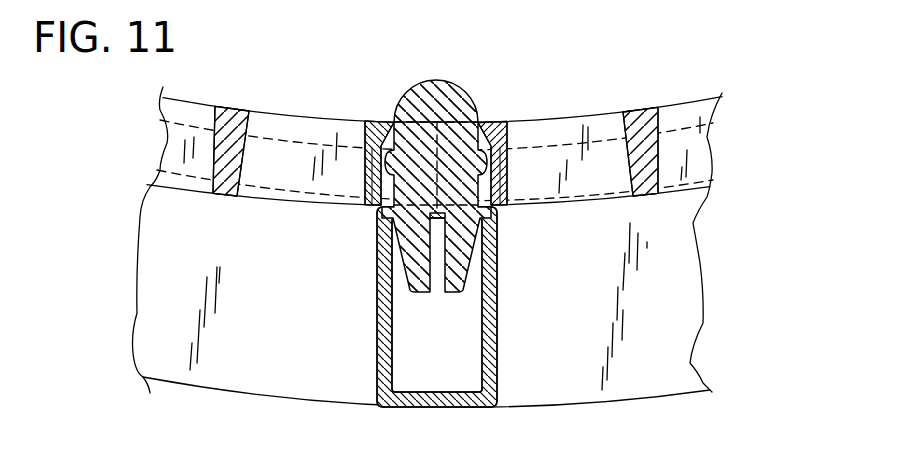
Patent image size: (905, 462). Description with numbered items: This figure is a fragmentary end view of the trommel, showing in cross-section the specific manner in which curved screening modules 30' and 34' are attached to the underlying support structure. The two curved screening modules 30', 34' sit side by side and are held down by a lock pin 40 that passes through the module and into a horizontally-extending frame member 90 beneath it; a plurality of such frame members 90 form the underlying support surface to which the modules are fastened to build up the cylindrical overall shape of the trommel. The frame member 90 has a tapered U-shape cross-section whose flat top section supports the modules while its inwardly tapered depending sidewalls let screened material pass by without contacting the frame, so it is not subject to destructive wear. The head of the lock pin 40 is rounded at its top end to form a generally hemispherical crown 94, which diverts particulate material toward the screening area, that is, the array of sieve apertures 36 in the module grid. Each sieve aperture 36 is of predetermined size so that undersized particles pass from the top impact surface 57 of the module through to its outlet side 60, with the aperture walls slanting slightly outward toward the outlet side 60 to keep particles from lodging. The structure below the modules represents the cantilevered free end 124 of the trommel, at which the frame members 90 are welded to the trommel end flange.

The curved screening module 30' is at (428, 223).
The curved screening module 34' is at (629, 123).
The sieve apertures 36 is at (286, 139).
The top impact surface 57 is at (305, 118).
The outlet side 60 is at (293, 204).
The lock pin 40 is at (430, 165).
The hemispherical crown 94 is at (453, 88).
The frame member 90 is at (500, 300).
The free end 124 is at (653, 335).